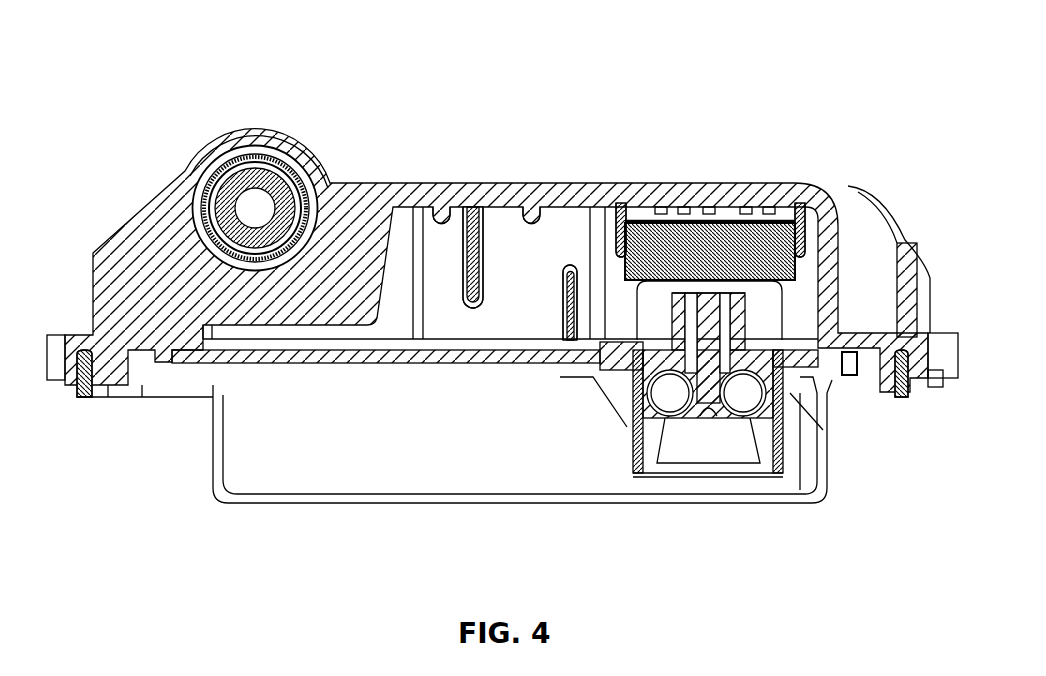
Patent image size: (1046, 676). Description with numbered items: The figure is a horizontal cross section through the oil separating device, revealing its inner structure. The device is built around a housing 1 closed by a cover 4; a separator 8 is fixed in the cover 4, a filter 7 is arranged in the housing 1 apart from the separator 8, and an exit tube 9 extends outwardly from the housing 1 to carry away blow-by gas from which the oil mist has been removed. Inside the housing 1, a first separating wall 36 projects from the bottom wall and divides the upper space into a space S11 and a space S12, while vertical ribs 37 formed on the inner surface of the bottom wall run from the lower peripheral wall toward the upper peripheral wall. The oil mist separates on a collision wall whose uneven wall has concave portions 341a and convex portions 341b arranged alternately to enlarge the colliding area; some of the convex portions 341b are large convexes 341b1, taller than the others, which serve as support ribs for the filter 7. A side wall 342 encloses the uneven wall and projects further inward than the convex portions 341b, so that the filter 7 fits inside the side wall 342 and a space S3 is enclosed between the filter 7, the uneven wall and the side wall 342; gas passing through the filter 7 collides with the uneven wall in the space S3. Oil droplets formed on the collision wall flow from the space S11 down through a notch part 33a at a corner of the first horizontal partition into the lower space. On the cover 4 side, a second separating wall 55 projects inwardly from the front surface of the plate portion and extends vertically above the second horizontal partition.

The housing 1 is at (128, 257).
The cover 4 is at (297, 467).
The filter 7 is at (677, 240).
The separator 8 is at (710, 460).
The exit tube 9 is at (255, 211).
The notch part 33a is at (812, 377).
The first separating wall 36 is at (497, 228).
The vertical ribs 37 is at (442, 230).
The second separating wall 55 is at (560, 325).
The concave portions 341a is at (622, 210).
The convex portions 341b is at (743, 217).
The large convexes 341b1 is at (800, 186).
The side wall 342 is at (603, 240).
The space S11 is at (573, 237).
The space S12 is at (410, 205).
The space S3 is at (727, 213).